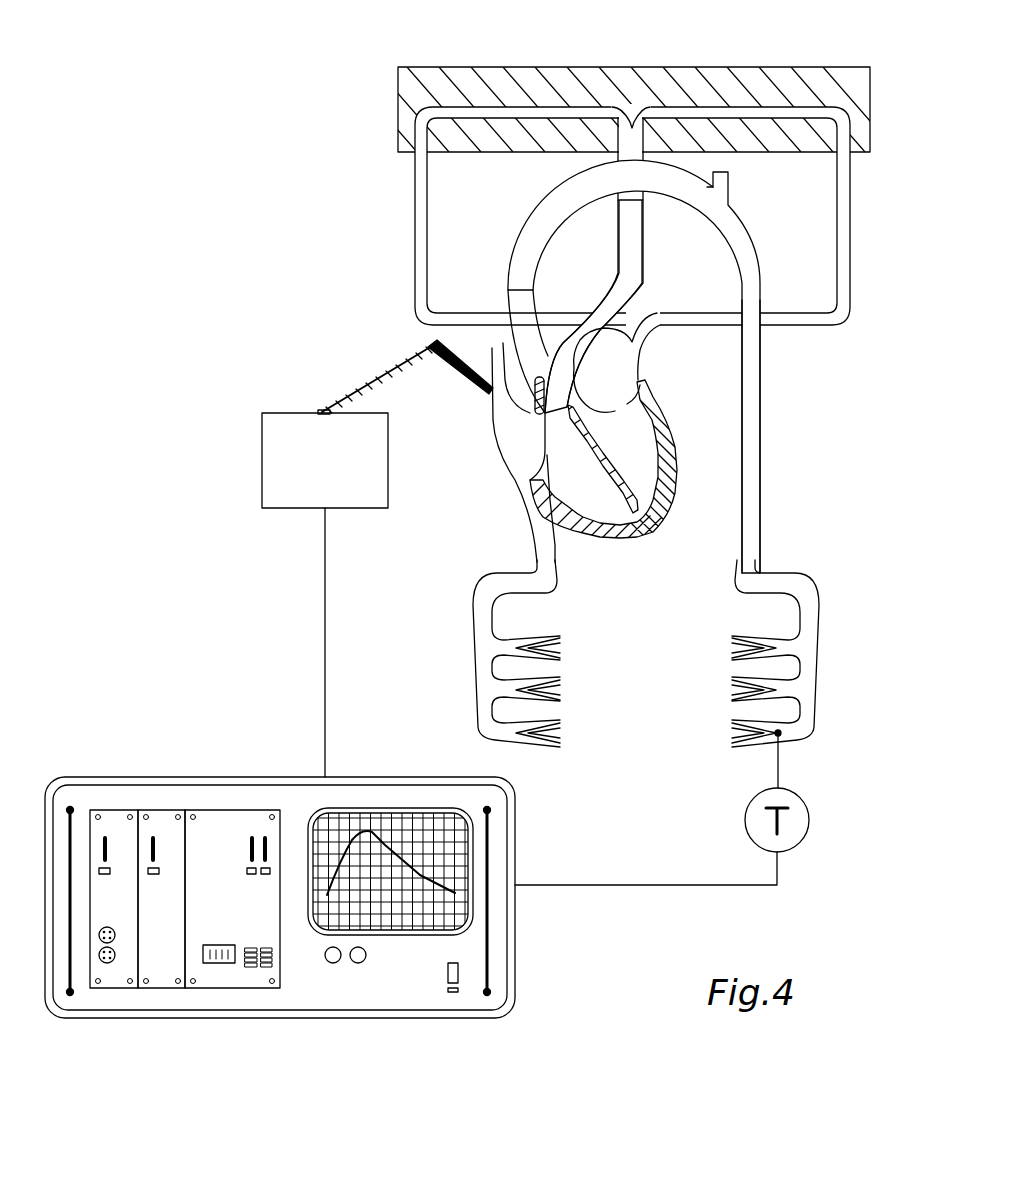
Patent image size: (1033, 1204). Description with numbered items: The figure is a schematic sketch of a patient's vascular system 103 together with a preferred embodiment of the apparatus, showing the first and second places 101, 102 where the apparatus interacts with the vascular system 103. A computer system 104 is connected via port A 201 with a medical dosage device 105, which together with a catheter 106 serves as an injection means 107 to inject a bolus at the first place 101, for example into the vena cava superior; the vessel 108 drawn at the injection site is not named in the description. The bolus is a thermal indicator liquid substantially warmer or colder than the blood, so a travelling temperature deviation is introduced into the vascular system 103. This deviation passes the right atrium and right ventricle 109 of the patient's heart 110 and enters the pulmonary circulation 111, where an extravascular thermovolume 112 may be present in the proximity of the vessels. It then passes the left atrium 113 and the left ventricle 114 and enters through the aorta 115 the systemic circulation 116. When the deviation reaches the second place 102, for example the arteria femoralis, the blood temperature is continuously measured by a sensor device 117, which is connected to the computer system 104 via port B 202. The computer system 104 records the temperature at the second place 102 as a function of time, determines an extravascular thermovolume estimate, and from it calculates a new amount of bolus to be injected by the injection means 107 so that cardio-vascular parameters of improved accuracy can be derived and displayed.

The first place 101 is at (492, 392).
The second place 102 is at (780, 735).
The vascular system 103 is at (758, 435).
The computer system 104 is at (515, 1017).
The medical dosage device 105 is at (262, 475).
The catheter 106 is at (412, 357).
The injection means 107 is at (316, 411).
The vessel 108 is at (513, 497).
The right atrium and right ventricle 109 is at (625, 482).
The heart 110 is at (655, 528).
The pulmonary circulation 111 is at (648, 113).
The extravascular thermovolume 112 is at (403, 115).
The left atrium 113 is at (619, 370).
The left ventricle 114 is at (637, 425).
The aorta 115 is at (538, 232).
The systemic circulation 116 is at (822, 600).
The sensor device 117 is at (750, 803).
The port A 201 is at (322, 776).
The port B 202 is at (515, 885).